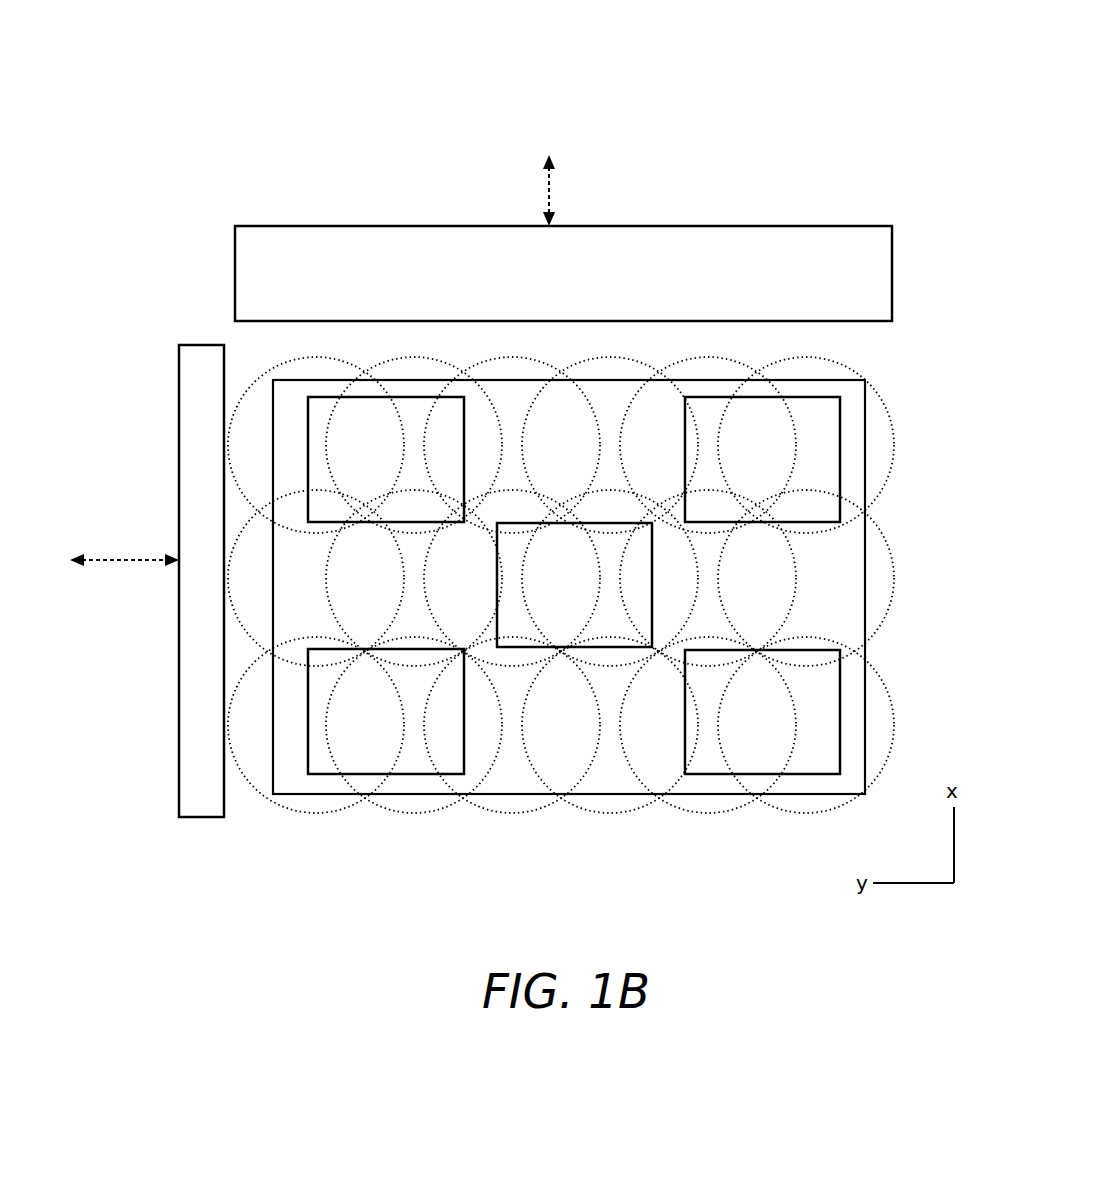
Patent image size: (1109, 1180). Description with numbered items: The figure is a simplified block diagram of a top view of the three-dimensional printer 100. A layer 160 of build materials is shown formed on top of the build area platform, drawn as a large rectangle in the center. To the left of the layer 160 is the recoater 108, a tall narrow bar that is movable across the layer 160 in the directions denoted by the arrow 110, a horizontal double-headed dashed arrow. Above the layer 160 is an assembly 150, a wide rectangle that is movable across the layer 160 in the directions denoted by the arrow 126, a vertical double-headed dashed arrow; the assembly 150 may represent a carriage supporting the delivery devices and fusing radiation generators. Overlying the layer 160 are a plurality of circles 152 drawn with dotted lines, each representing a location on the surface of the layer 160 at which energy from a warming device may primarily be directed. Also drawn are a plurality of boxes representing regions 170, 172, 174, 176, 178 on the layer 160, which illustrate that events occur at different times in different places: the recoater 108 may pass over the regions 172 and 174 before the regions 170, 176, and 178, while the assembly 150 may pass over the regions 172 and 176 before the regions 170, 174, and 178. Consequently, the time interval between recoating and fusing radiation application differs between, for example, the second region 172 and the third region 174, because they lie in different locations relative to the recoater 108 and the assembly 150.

The 3D printer 100 is at (538, 35).
The recoater 108 is at (203, 818).
The arrow 110 is at (143, 558).
The arrow 126 is at (550, 181).
The assembly 150 is at (893, 282).
The circles 152 is at (890, 688).
The layer 160 is at (855, 553).
The region 170 is at (595, 596).
The second region 172 is at (408, 468).
The third region 174 is at (408, 723).
The region 176 is at (784, 468).
The region 178 is at (784, 723).